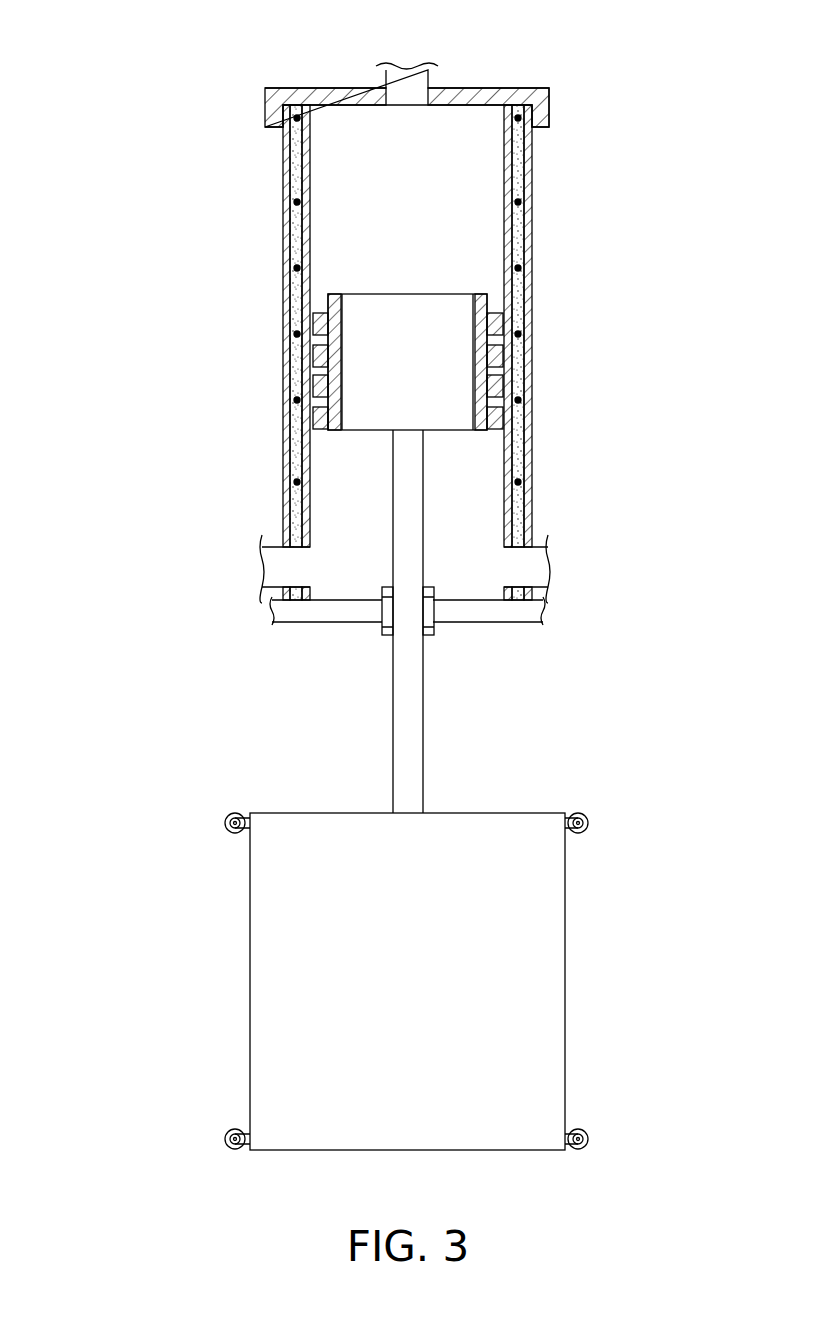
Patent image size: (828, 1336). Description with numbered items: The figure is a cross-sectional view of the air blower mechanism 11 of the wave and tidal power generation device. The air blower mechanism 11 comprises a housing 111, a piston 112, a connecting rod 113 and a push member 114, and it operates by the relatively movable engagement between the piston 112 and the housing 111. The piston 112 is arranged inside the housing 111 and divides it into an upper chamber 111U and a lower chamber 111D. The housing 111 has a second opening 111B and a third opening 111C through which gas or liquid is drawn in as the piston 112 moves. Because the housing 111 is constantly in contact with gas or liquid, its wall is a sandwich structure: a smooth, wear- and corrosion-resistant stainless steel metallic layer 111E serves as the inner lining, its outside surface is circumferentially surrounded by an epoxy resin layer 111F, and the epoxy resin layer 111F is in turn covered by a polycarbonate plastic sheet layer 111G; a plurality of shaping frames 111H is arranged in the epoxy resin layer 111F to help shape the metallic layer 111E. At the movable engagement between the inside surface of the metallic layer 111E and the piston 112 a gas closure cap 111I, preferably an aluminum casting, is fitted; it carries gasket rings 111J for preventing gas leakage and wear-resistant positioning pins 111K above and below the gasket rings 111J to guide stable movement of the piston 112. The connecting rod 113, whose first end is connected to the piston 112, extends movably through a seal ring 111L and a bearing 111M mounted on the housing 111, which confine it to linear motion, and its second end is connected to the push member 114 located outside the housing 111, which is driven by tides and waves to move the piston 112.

The air blower mechanism 11 is at (46, 40).
The housing 111 is at (549, 92).
The second opening 111B is at (296, 568).
The third opening 111C is at (520, 568).
The lower chamber 111D is at (455, 507).
The metallic layer 111E is at (306, 152).
The epoxy resin layer 111F is at (298, 114).
The plastic sheet layer 111G is at (296, 181).
The shaping frames 111H is at (296, 203).
The gas closure cap 111I is at (334, 298).
The gasket rings 111J is at (320, 385).
The wear-resistant positioning pins 111K is at (496, 412).
The seal ring 111L is at (432, 630).
The bearing 111M is at (384, 615).
The upper chamber 111U is at (430, 242).
The piston 112 is at (432, 305).
The connecting rod 113 is at (408, 726).
The push member 114 is at (530, 990).